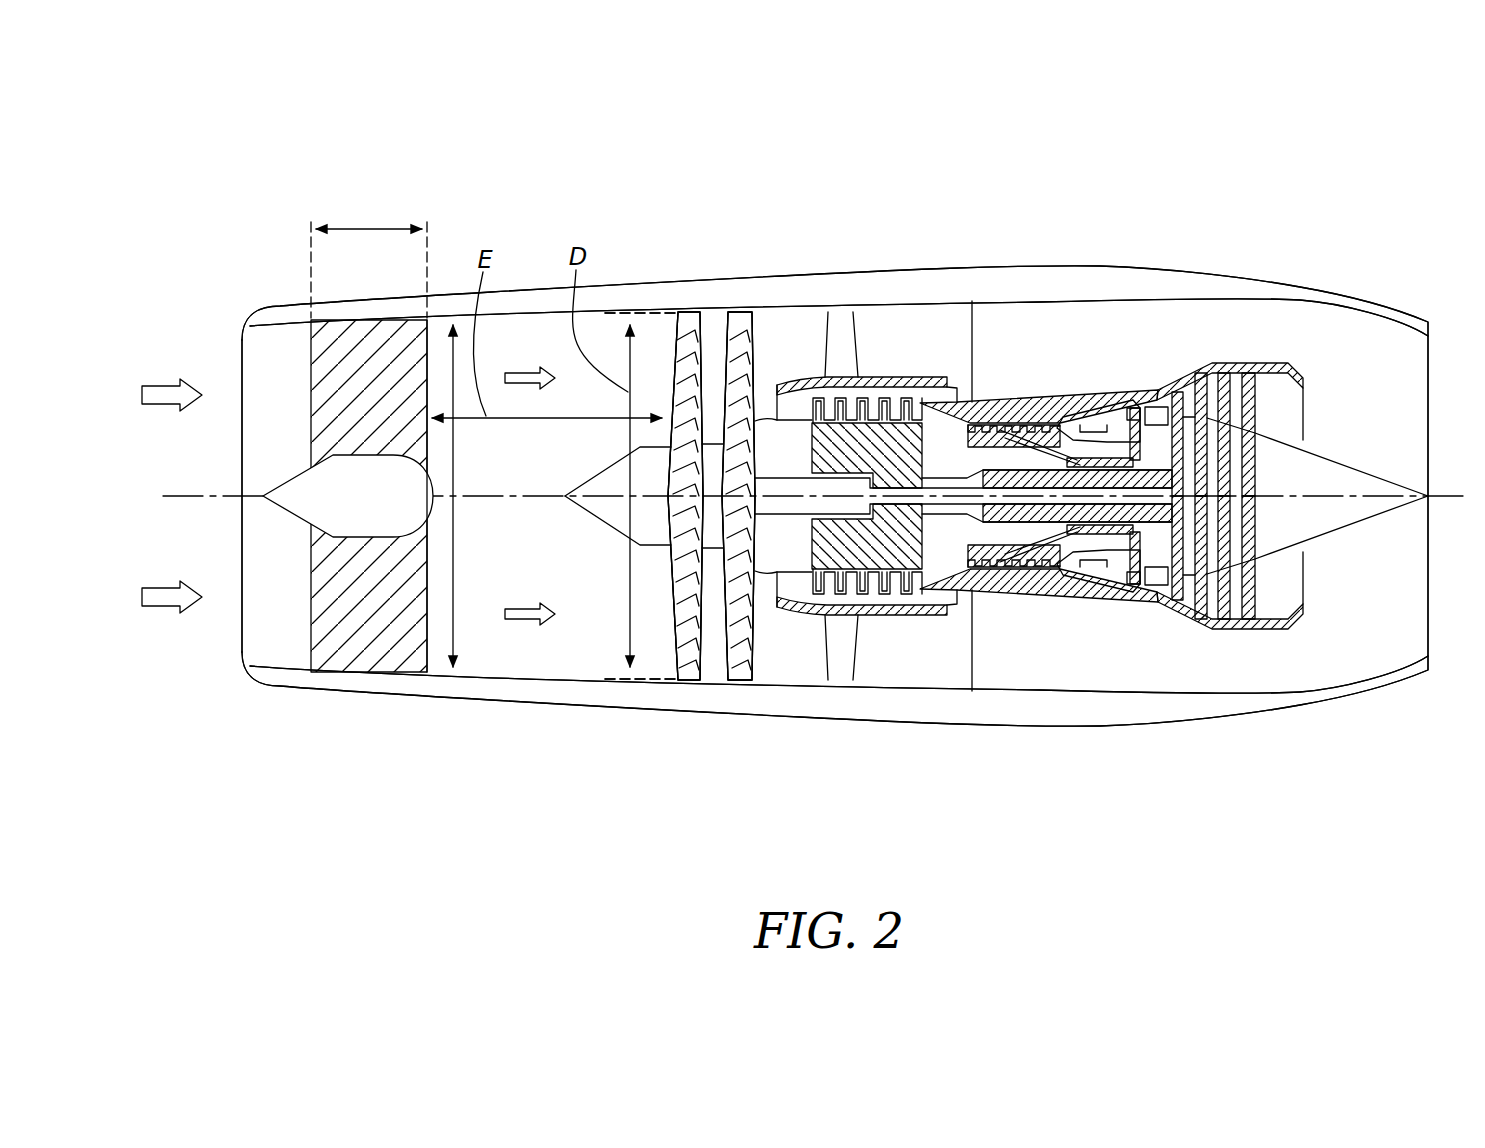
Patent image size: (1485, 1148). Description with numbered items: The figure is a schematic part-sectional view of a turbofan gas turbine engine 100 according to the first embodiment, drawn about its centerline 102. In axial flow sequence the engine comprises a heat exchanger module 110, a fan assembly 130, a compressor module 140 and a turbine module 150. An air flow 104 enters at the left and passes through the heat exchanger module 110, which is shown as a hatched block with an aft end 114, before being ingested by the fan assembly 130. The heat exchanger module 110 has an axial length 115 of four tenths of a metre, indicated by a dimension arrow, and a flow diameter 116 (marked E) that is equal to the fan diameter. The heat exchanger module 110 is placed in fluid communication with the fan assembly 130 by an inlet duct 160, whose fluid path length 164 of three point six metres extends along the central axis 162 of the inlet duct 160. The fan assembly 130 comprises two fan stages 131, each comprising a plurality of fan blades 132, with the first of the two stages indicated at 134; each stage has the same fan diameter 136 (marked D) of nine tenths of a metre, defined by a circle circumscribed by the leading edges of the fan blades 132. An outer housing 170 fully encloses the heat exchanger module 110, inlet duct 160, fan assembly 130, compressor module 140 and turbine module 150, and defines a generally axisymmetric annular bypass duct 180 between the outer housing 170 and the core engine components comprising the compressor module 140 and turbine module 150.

The turbofan gas turbine engine 100 is at (236, 116).
The engine centerline axis 102 is at (177, 494).
The air flow 104 is at (164, 381).
The heat exchanger module 110 is at (341, 655).
The inlet aft end 114 is at (438, 678).
The axial length 115 is at (370, 228).
The flow diameter 116 is at (455, 377).
The fan assembly 130 is at (742, 311).
The fan stage 131 is at (740, 681).
The fan blades 132 is at (740, 371).
The first fan stage 134 is at (675, 347).
The fan diameter 136 is at (626, 363).
The compressor module 140 is at (935, 630).
The turbine module 150 is at (1165, 624).
The inlet duct 160 is at (537, 655).
The central axis 162 is at (465, 498).
The fluid path length 164 is at (489, 416).
The outer housing 170 is at (900, 267).
The bypass duct 180 is at (930, 323).